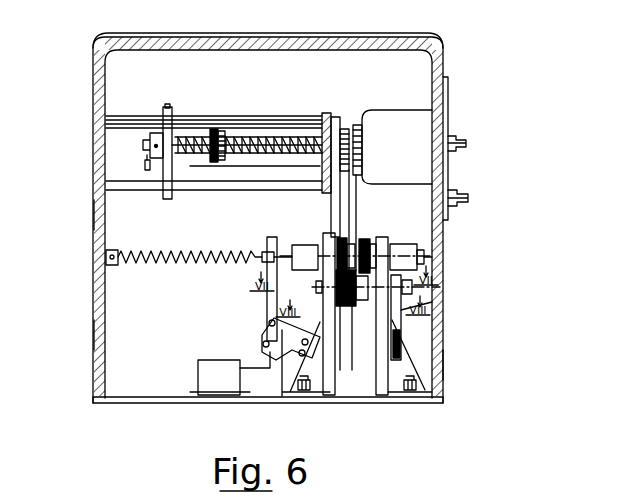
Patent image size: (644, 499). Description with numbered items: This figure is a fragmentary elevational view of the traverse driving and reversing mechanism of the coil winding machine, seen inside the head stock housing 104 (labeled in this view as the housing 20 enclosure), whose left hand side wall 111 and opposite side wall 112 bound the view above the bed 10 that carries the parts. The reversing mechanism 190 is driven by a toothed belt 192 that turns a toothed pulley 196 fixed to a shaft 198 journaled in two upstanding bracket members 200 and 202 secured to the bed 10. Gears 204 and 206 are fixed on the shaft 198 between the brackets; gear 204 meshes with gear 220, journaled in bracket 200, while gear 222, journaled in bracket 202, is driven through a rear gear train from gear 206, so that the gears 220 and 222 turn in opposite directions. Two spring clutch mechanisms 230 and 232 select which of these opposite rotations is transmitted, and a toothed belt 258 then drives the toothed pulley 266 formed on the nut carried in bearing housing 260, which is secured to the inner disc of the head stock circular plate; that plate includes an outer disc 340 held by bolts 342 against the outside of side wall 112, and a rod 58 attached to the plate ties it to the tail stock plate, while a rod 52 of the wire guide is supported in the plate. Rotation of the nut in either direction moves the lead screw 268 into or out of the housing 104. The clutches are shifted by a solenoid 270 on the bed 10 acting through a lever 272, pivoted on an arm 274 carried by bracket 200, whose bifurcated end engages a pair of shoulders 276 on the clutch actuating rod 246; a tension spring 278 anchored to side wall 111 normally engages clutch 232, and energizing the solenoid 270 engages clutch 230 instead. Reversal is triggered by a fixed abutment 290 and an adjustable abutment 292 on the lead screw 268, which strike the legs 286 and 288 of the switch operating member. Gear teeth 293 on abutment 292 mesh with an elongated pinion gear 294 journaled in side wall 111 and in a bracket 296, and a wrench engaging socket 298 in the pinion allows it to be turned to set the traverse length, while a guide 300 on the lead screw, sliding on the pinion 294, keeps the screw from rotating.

The bed 10 is at (122, 404).
The housing 20 is at (291, 33).
The rod 52 is at (254, 184).
The rod 58 is at (466, 205).
The housing 104 is at (99, 210).
The left hand side wall 111 is at (99, 331).
The side wall 112 is at (447, 363).
The reversing mechanism 190 is at (392, 240).
The toothed belt 192 is at (440, 320).
The toothed pulley 196 is at (440, 284).
The shaft 198 is at (332, 286).
The bracket member 200 is at (291, 397).
The bracket member 202 is at (397, 397).
The gear 204 is at (357, 338).
The gear 206 is at (350, 306).
The gear 220 is at (343, 231).
The gear 222 is at (371, 236).
The spring clutch mechanism 230 is at (304, 235).
The spring clutch mechanism 232 is at (435, 252).
The clutch actuating rod 246 is at (270, 256).
The toothed belt 258 is at (348, 197).
The bearing housing 260 is at (388, 160).
The toothed pulley 266 is at (360, 125).
The lead screw 268 is at (343, 129).
The solenoid 270 is at (222, 397).
The lever 272 is at (300, 280).
The arm 274 is at (263, 336).
The shoulders 276 is at (258, 256).
The tension spring 278 is at (150, 262).
The leg 286 is at (145, 165).
The leg 288 is at (274, 168).
The abutment 290 is at (150, 139).
The abutment 292 is at (214, 129).
The gear teeth 293 is at (224, 131).
The elongated pinion gear 294 is at (132, 120).
The bracket 296 is at (322, 125).
The wrench engaging socket 298 is at (100, 124).
The guide 300 is at (170, 104).
The outer disc 340 is at (452, 96).
The bolts 342 is at (467, 170).